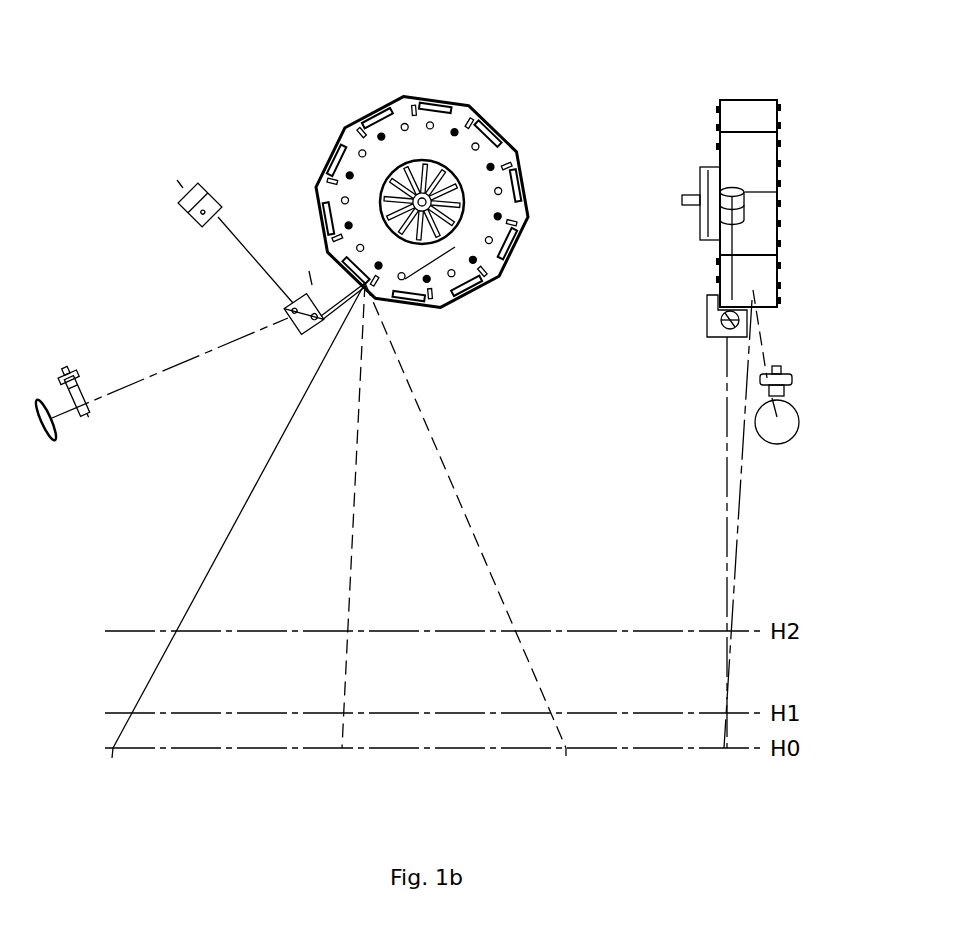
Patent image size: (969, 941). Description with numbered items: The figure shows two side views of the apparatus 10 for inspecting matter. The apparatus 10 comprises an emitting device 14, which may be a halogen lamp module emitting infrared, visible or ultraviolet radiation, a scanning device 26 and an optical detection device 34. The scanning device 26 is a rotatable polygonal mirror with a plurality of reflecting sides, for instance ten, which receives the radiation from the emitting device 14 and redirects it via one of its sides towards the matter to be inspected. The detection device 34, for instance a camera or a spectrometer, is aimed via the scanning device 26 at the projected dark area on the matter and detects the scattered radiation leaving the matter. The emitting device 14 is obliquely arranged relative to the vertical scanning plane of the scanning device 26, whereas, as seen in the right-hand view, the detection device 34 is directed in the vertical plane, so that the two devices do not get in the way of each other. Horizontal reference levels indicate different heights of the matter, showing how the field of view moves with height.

The apparatus 10 is at (438, 378).
The emitting device 14 is at (438, 381).
The scanning device 26 is at (579, 225).
The optical detection device 34 is at (450, 464).